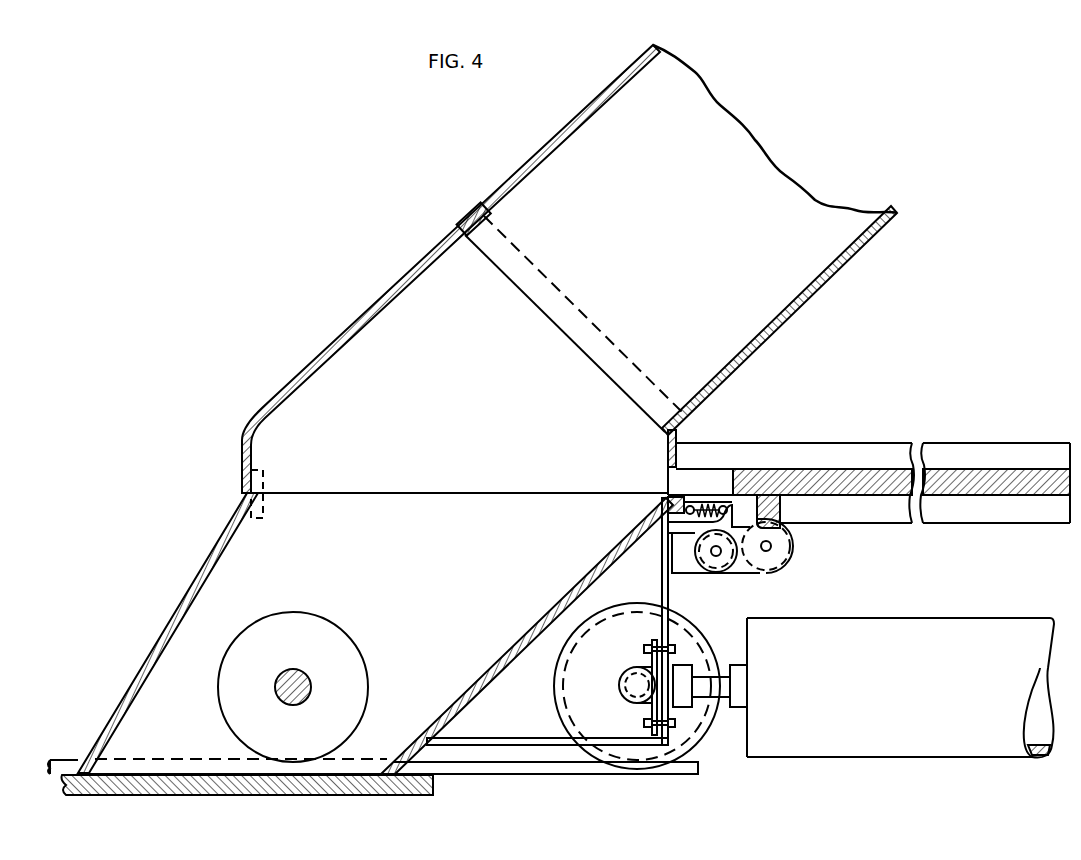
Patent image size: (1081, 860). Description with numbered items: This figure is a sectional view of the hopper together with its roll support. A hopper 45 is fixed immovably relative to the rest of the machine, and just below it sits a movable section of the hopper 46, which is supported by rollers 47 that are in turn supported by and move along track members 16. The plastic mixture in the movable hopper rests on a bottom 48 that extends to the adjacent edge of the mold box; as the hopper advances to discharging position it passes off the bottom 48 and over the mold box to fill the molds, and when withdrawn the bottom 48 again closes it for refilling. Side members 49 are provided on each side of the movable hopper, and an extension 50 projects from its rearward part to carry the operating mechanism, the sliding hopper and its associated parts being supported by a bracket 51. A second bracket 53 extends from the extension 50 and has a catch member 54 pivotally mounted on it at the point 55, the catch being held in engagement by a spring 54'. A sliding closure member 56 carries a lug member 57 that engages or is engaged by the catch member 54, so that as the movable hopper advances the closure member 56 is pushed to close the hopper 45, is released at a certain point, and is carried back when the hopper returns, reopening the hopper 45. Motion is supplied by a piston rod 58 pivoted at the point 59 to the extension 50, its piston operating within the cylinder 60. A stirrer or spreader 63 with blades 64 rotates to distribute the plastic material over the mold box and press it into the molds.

The track members 16 is at (490, 760).
The hopper 45 is at (372, 311).
The movable section of the hopper 46 is at (222, 566).
The rollers 47 is at (552, 678).
The bottom 48 is at (440, 790).
The side members 49 is at (561, 598).
The extension 50 is at (667, 589).
The bracket 51 is at (538, 738).
The second bracket 53 is at (680, 557).
The catch member 54 is at (793, 546).
The spring 54' is at (724, 460).
The point 55 is at (716, 557).
The sliding closure member 56 is at (856, 470).
The lug member 57 is at (787, 508).
The piston rod 58 is at (703, 674).
The point 59 is at (617, 682).
The cylinder 60 is at (903, 618).
The stirrer or spreader 63 is at (313, 679).
The blades 64 is at (343, 627).